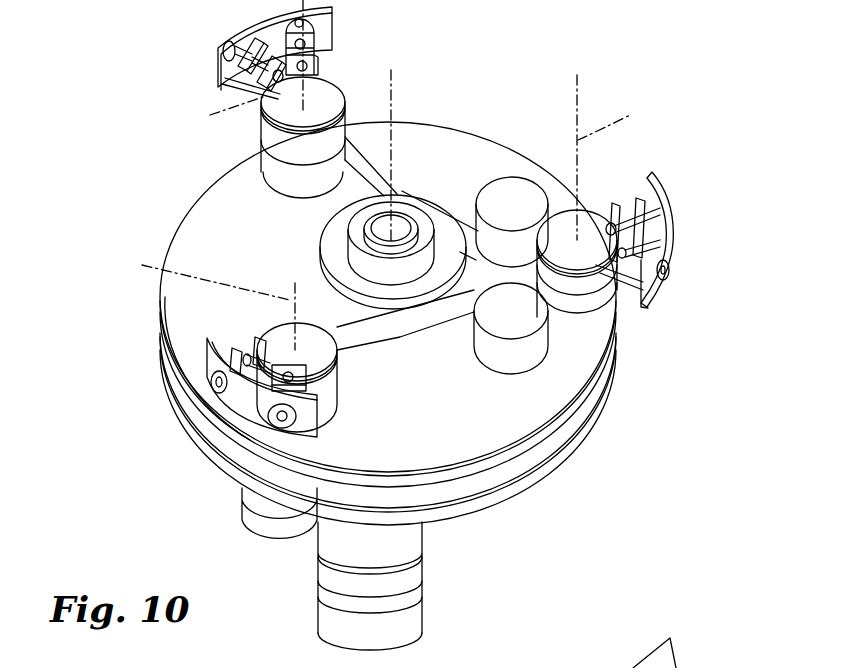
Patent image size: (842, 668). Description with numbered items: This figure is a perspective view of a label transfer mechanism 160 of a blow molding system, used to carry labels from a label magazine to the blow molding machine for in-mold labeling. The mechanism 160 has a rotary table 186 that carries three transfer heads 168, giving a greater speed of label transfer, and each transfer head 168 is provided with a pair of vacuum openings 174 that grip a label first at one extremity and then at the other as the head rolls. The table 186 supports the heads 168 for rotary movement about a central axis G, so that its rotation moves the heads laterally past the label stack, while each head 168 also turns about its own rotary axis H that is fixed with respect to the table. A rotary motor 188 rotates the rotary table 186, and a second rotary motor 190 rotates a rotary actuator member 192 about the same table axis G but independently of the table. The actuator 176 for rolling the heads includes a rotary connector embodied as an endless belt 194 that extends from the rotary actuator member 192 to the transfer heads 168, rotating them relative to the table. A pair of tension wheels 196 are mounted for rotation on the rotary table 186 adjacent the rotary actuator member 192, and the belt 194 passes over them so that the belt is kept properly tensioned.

The label transfer mechanism 160 is at (549, 123).
The transfer head 168 is at (342, 55).
The vacuum opening 174 is at (668, 269).
The actuator 176 is at (308, 277).
The rotary table 186 is at (533, 420).
The rotary motor 188 is at (400, 547).
The rotary motor 190 is at (413, 622).
The rotary actuator member 192 is at (330, 260).
The endless belt 194 is at (390, 360).
The tension wheel 196 is at (508, 192).
The central axis G is at (397, 95).
The rotary axis H is at (383, 198).